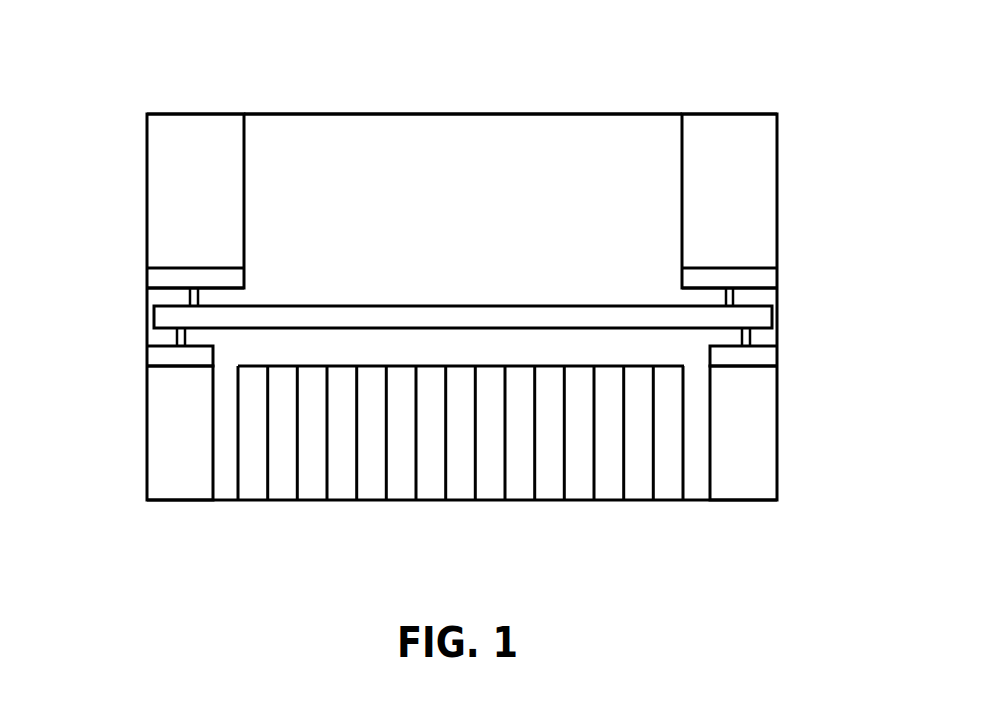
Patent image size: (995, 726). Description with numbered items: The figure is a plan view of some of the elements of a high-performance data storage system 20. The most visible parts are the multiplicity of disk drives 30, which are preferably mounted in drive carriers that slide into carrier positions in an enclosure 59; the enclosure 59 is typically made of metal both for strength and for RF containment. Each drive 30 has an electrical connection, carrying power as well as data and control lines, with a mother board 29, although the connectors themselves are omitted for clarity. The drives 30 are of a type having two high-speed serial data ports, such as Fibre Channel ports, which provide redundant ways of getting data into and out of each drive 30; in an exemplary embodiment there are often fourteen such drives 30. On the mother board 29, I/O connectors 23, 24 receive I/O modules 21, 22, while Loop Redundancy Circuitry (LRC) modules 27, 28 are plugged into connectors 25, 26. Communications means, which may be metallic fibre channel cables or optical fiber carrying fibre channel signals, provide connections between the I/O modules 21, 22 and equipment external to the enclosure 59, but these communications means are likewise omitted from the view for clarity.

The high-performance data storage system 20 is at (521, 72).
The I/O module 21 is at (202, 126).
The I/O module 22 is at (724, 130).
The I/O connector 23 is at (158, 279).
The I/O connector 24 is at (764, 282).
The connector 25 is at (157, 355).
The connector 26 is at (766, 357).
The Loop Redundancy Circuitry module 27 is at (160, 425).
The Loop Redundancy Circuitry module 28 is at (764, 443).
The mother board 29 is at (566, 307).
The disk drives 30 is at (638, 483).
The enclosure 59 is at (347, 126).